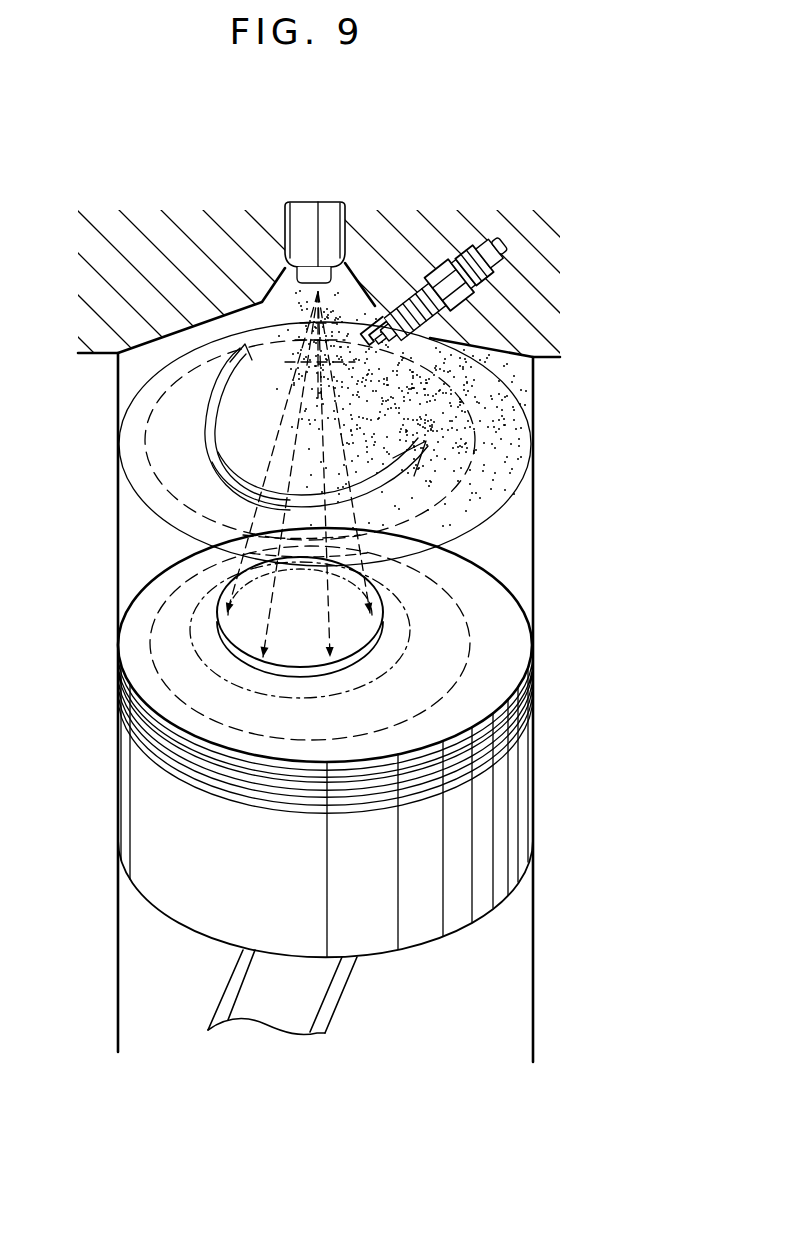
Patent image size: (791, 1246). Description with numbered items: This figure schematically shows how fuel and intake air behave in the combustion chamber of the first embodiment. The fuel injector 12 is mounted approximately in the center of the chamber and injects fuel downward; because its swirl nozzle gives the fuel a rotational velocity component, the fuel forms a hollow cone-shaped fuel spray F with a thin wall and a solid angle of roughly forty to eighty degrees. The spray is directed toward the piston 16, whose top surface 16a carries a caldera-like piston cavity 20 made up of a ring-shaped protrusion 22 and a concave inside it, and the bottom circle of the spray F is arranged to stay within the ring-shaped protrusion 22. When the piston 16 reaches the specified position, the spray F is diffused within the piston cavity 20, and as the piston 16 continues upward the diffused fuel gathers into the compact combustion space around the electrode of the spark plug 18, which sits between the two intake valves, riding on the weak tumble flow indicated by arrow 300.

The fuel injector 12 is at (303, 213).
The spark plug 18 is at (473, 240).
The tumble flow 300 is at (210, 407).
The hollow cone-shaped fuel spray F is at (265, 447).
The piston 16 is at (367, 769).
The top surface of the piston 16a is at (477, 582).
The piston cavity 20 is at (385, 605).
The ring-shaped protrusion 22 is at (385, 676).